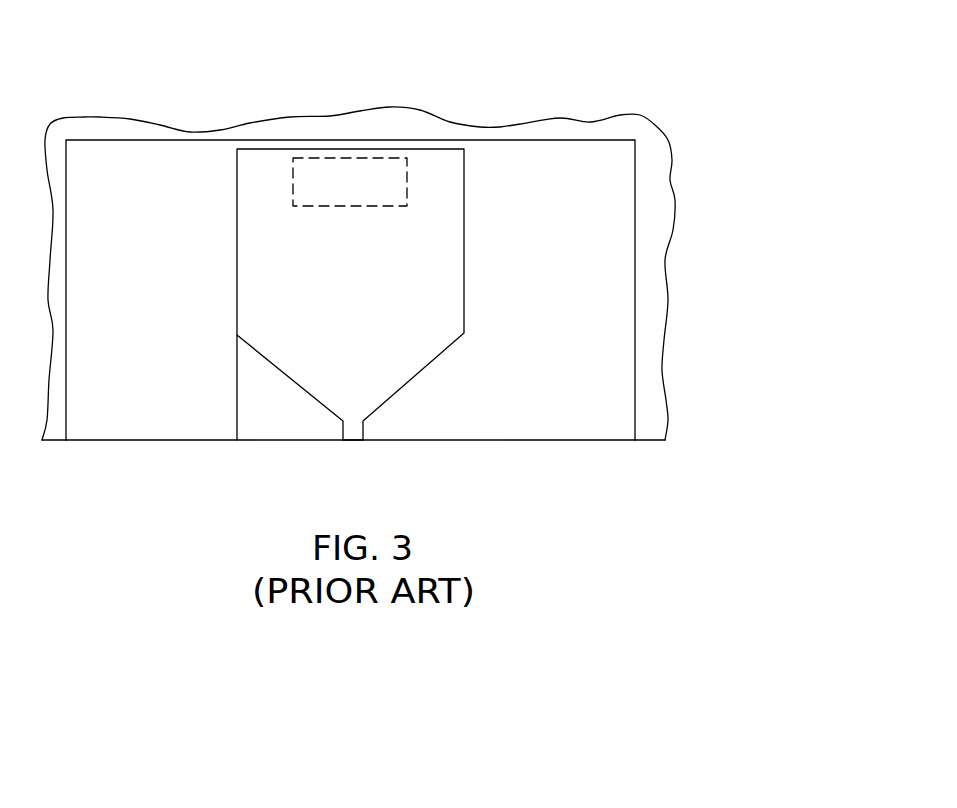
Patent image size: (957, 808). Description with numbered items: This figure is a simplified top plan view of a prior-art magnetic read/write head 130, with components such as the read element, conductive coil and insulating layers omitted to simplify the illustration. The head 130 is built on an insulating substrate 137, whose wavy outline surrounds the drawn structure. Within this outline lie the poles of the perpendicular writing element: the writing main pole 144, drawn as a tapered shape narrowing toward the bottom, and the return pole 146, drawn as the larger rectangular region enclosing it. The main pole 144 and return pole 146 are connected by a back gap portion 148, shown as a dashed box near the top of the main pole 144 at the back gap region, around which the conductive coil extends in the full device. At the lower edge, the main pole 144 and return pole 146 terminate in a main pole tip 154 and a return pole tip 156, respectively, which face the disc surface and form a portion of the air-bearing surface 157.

The magnetic read/write head 130 is at (685, 80).
The insulating substrate 137 is at (655, 400).
The writing main pole 144 is at (257, 326).
The return pole 146 is at (605, 262).
The back gap portion 148 is at (380, 187).
The main pole tip 154 is at (353, 440).
The return pole tip 156 is at (117, 440).
The air-bearing surface 157 is at (607, 440).